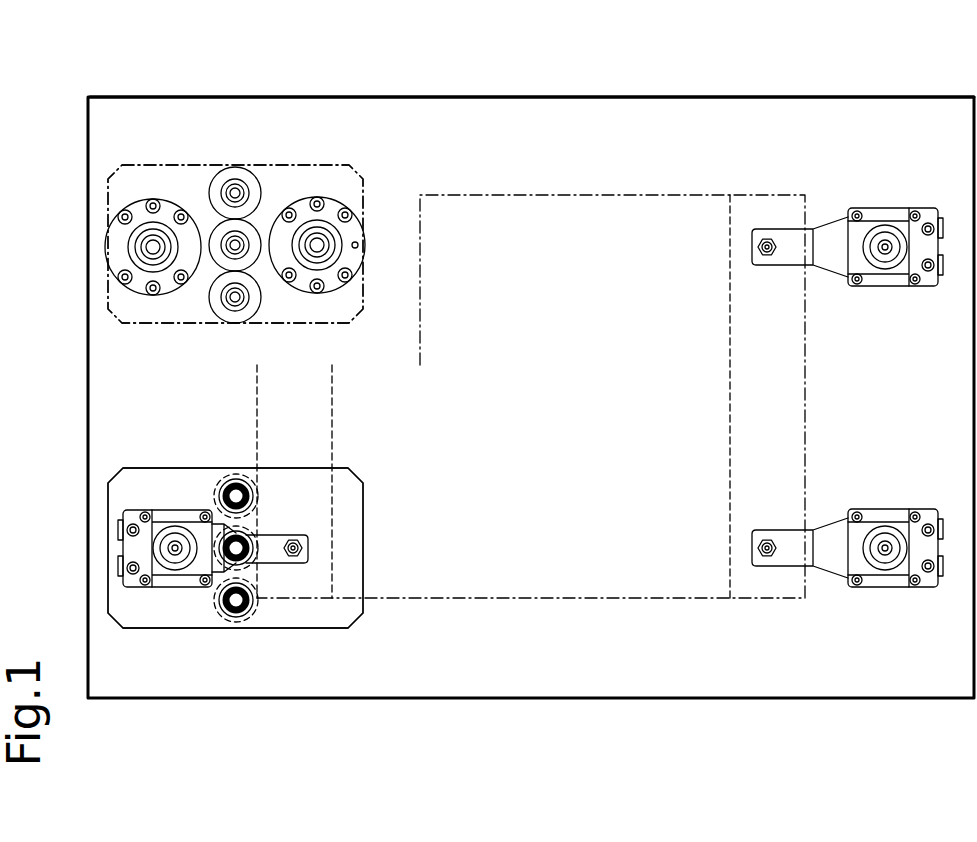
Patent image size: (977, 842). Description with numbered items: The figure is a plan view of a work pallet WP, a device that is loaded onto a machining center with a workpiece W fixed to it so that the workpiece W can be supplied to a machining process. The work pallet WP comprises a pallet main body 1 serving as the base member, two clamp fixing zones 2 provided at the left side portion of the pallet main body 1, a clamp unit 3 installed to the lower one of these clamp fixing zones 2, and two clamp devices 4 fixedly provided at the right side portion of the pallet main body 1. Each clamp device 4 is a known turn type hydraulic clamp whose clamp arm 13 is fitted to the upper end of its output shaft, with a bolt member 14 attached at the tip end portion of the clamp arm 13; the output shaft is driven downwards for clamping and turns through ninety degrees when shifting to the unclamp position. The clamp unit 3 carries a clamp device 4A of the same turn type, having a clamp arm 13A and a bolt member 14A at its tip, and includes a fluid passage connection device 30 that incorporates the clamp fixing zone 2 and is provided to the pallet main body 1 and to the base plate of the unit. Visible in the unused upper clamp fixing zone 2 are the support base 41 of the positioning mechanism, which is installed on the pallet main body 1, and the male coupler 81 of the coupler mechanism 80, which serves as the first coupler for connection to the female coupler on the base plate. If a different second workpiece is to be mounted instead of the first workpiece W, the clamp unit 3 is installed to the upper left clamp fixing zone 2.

The pallet main body 1 is at (522, 95).
The work pallet WP is at (701, 90).
The workpiece W is at (573, 193).
The clamp fixing zone 2 is at (298, 183).
The clamp unit 3 is at (178, 330).
The support base 41 is at (153, 199).
The male coupler 81 is at (211, 240).
The coupler mechanism 80 is at (223, 476).
The clamp device 4A is at (175, 591).
The clamp arm 13A is at (276, 566).
The bolt member 14A is at (302, 560).
The fluid passage connection device 30 is at (217, 634).
The clamp device 4 is at (881, 203).
The clamp arm 13 is at (828, 269).
The bolt member 14 is at (767, 257).